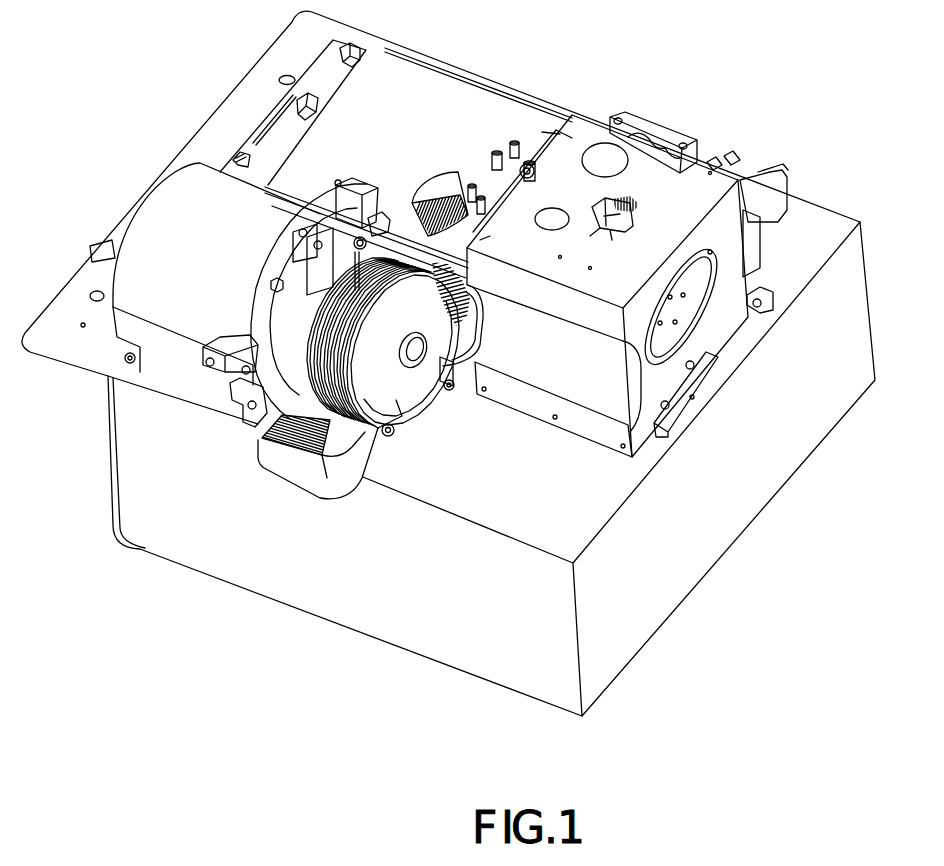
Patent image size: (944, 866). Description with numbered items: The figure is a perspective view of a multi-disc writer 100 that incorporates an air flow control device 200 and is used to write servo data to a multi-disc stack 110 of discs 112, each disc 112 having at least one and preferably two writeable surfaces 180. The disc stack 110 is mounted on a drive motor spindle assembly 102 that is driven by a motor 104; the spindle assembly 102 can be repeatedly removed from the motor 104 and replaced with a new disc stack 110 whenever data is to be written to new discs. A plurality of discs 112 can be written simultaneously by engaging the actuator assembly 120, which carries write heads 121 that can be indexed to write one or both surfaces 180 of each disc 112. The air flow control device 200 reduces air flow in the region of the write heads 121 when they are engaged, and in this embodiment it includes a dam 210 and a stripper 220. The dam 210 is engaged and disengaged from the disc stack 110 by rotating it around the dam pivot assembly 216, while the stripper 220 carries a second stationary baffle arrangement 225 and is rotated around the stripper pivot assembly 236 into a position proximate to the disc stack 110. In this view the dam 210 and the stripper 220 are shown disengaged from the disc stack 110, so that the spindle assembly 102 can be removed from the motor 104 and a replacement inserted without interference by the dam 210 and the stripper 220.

The multi-disc writer 100 is at (693, 96).
The drive motor spindle assembly 102 is at (423, 360).
The motor 104 is at (157, 197).
The multi-disc stack 110 is at (440, 317).
The disc 112 is at (395, 395).
The actuator assembly 120 is at (590, 122).
The write heads 121 is at (447, 278).
The writeable surfaces 180 is at (393, 335).
The air flow control device 200 is at (407, 490).
The dam 210 is at (344, 486).
The dam pivot assembly 216 is at (392, 435).
The stripper 220 is at (466, 338).
The second stationary baffle arrangement 225 is at (447, 265).
The stripper pivot assembly 236 is at (453, 388).